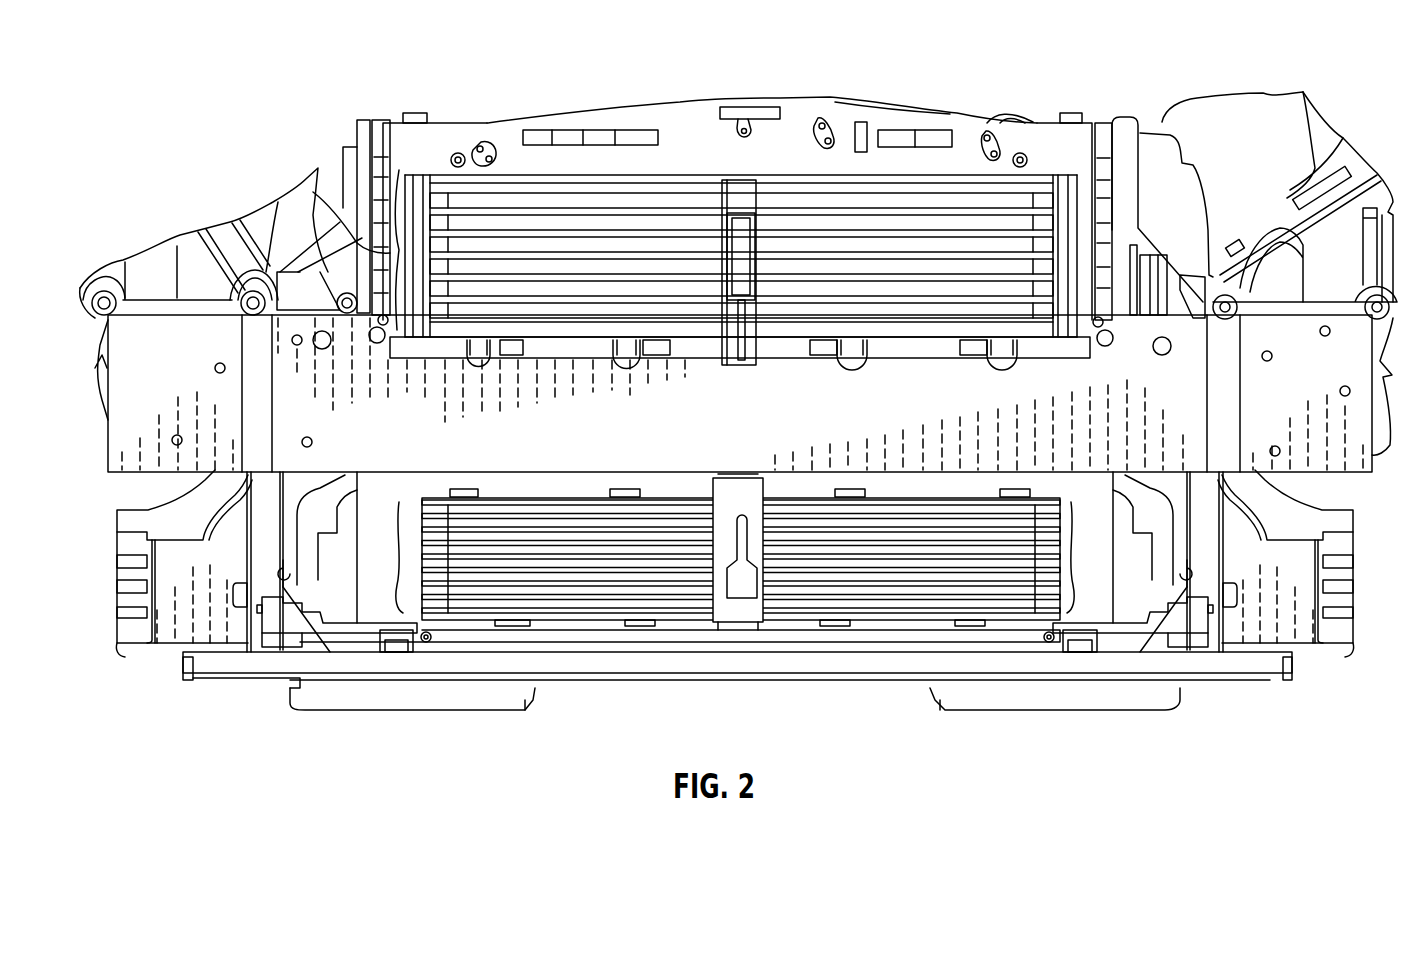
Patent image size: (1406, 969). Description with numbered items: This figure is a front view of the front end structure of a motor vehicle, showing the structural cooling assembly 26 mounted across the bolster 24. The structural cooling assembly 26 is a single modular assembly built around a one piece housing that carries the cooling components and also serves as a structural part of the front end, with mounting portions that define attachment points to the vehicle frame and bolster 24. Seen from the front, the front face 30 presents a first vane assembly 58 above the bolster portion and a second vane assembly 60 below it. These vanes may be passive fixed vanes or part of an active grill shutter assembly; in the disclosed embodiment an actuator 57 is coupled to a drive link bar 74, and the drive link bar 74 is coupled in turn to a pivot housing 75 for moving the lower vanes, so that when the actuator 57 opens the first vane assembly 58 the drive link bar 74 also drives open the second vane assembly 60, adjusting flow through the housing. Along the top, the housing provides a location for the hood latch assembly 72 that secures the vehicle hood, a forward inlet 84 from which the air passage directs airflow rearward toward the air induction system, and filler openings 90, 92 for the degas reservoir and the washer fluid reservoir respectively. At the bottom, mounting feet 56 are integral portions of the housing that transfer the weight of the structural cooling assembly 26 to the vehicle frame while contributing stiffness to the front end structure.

The bolster 24 is at (108, 450).
The structural cooling assembly 26 is at (738, 221).
The front face 30 is at (492, 142).
The mounting feet 56 is at (395, 648).
The actuator 57 is at (738, 230).
The first vane assembly 58 is at (313, 192).
The second vane assembly 60 is at (393, 553).
The hood latch assembly 72 is at (746, 113).
The drive link bar 74 is at (760, 356).
The pivot housing 75 is at (741, 604).
The forward inlet 84 is at (614, 118).
The filler opening 90 is at (1071, 113).
The filler opening 92 is at (416, 113).